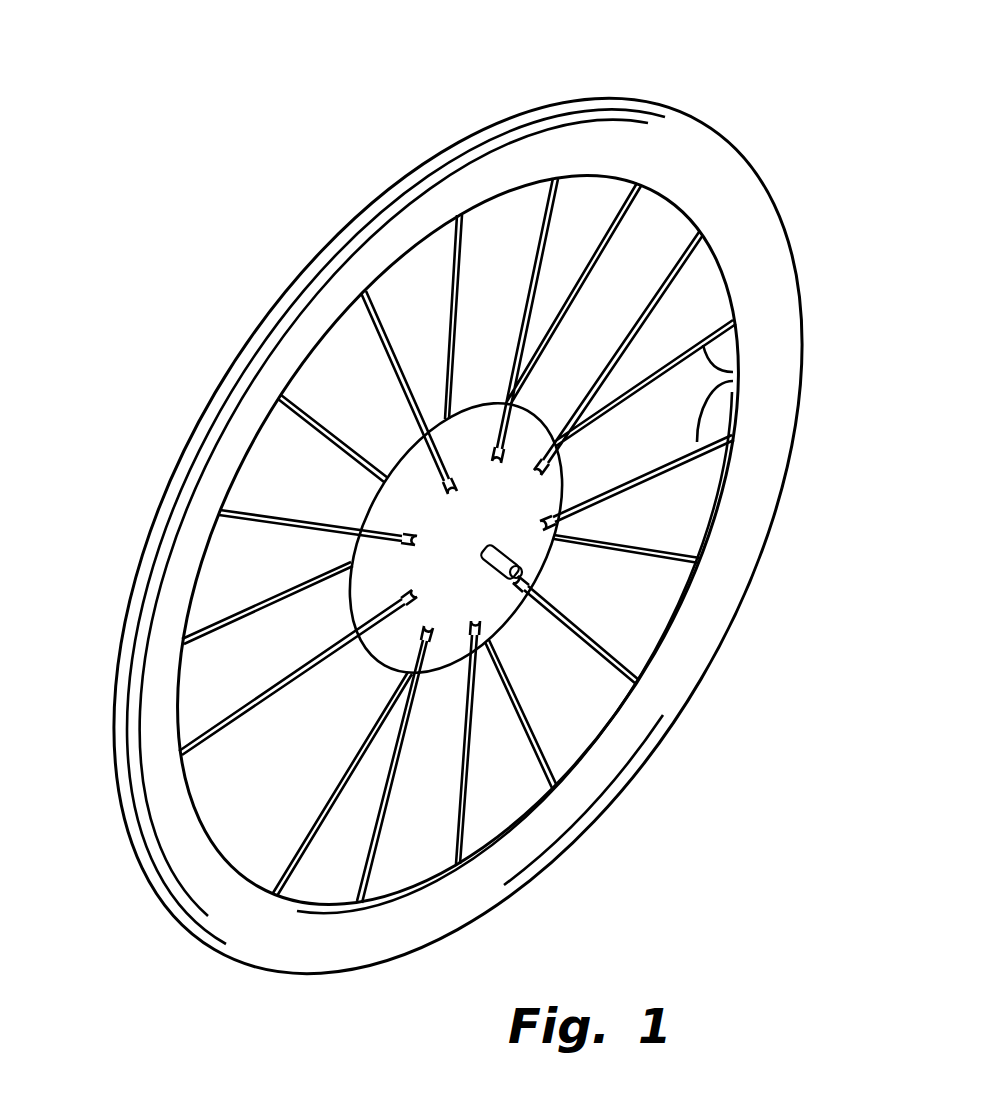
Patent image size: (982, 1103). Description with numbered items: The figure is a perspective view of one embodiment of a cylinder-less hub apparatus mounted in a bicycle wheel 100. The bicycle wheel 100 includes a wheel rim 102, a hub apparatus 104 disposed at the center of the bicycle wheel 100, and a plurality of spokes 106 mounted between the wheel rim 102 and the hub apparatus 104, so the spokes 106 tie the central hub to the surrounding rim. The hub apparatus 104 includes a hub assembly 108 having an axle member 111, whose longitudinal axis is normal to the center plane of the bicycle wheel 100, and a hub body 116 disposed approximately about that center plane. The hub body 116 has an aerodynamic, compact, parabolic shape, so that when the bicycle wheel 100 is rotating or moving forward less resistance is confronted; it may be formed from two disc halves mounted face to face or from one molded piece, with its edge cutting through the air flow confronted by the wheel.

The bicycle wheel 100 is at (366, 122).
The wheel rim 102 is at (774, 256).
The hub apparatus 104 is at (425, 500).
The spokes 106 is at (733, 372).
The hub assembly 108 is at (474, 548).
The axle member 111 is at (560, 529).
The hub body 116 is at (533, 566).